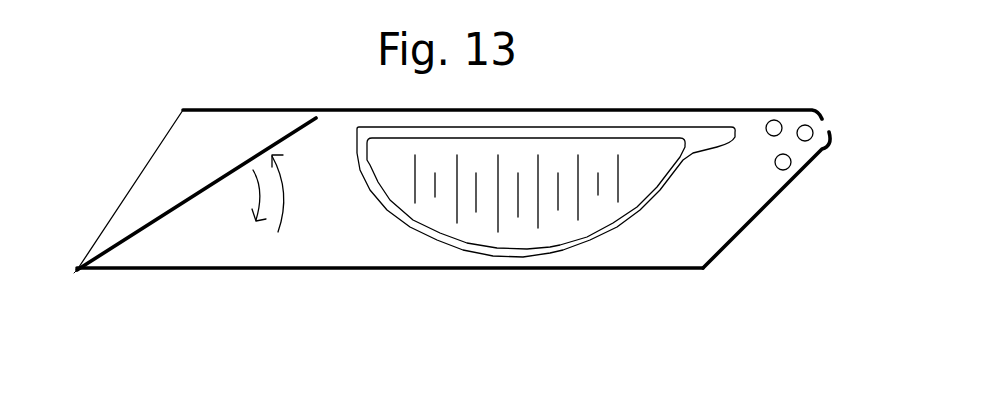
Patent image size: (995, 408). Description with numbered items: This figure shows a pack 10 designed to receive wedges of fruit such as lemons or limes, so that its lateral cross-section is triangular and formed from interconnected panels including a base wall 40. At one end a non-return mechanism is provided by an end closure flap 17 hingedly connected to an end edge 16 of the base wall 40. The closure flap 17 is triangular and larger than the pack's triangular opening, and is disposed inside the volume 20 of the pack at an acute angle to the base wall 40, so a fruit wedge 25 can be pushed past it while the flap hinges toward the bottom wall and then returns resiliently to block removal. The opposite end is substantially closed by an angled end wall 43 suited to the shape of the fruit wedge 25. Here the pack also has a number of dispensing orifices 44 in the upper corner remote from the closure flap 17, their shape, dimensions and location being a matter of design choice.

The pack 10 is at (452, 194).
The end edge 16 is at (75, 272).
The end closure flap 17 is at (190, 198).
The volume 20 is at (355, 243).
The fruit wedge 25 is at (595, 150).
The base wall 40 is at (462, 270).
The angled end wall 43 is at (743, 228).
The dispensing orifices 44 is at (805, 124).